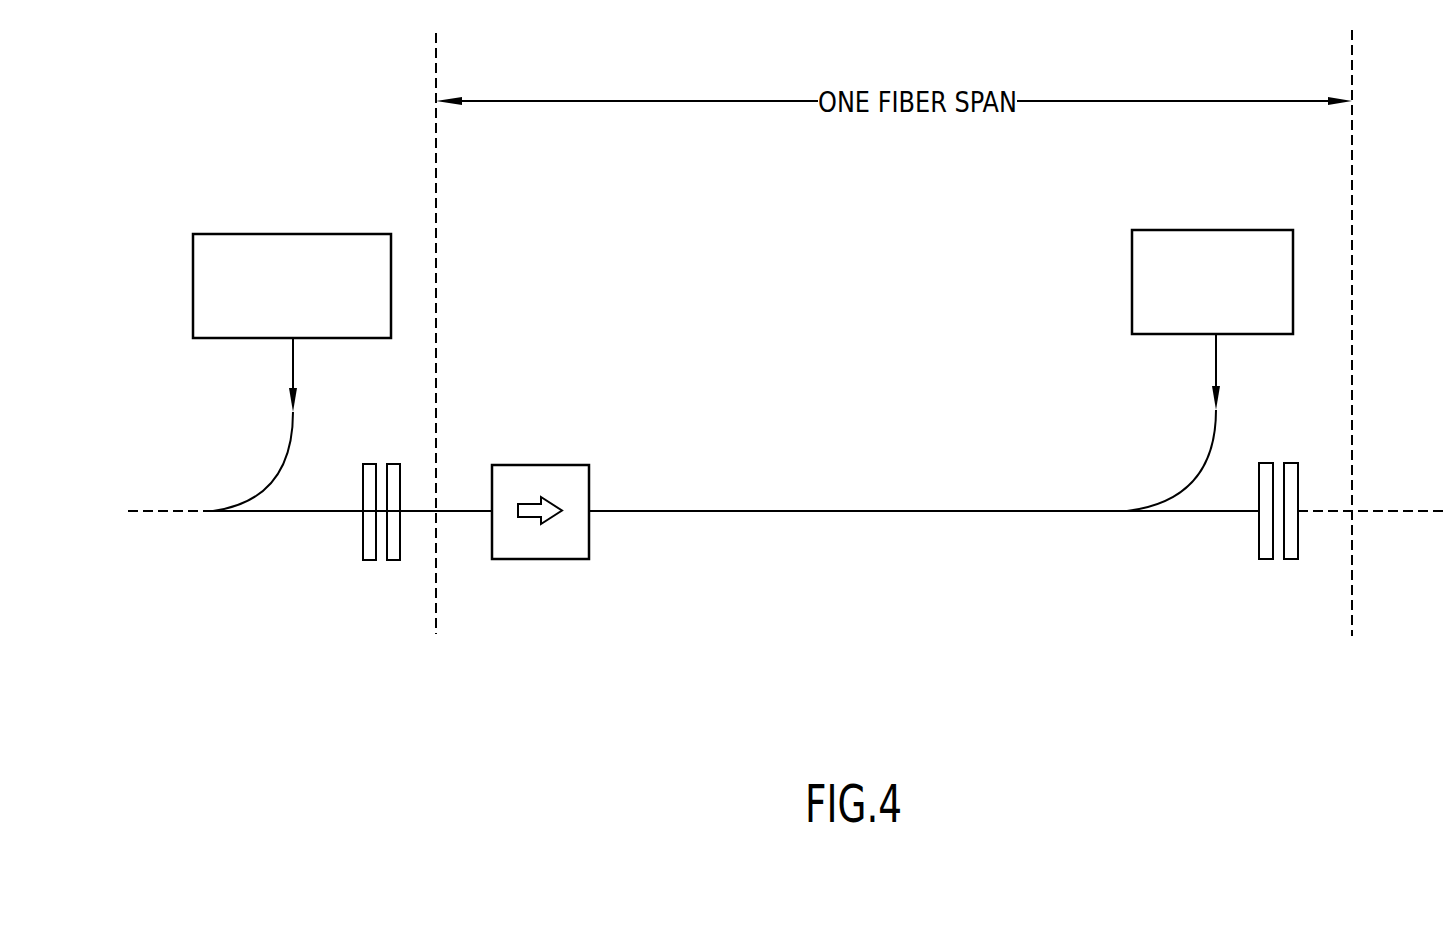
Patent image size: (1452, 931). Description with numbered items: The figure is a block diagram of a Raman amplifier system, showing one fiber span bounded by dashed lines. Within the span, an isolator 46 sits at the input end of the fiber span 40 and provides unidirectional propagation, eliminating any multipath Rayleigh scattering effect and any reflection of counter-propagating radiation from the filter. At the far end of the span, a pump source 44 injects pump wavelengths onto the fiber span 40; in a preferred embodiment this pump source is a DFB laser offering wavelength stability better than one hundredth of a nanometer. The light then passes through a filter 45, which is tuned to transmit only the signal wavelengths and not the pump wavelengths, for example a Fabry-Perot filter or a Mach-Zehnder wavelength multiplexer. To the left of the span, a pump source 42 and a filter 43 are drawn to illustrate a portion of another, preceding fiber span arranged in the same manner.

The fiber span 40 is at (858, 512).
The pump source 42 is at (290, 252).
The filter 43 is at (362, 529).
The pump source 44 is at (1212, 246).
The filter 45 is at (1258, 529).
The isolator 46 is at (542, 559).